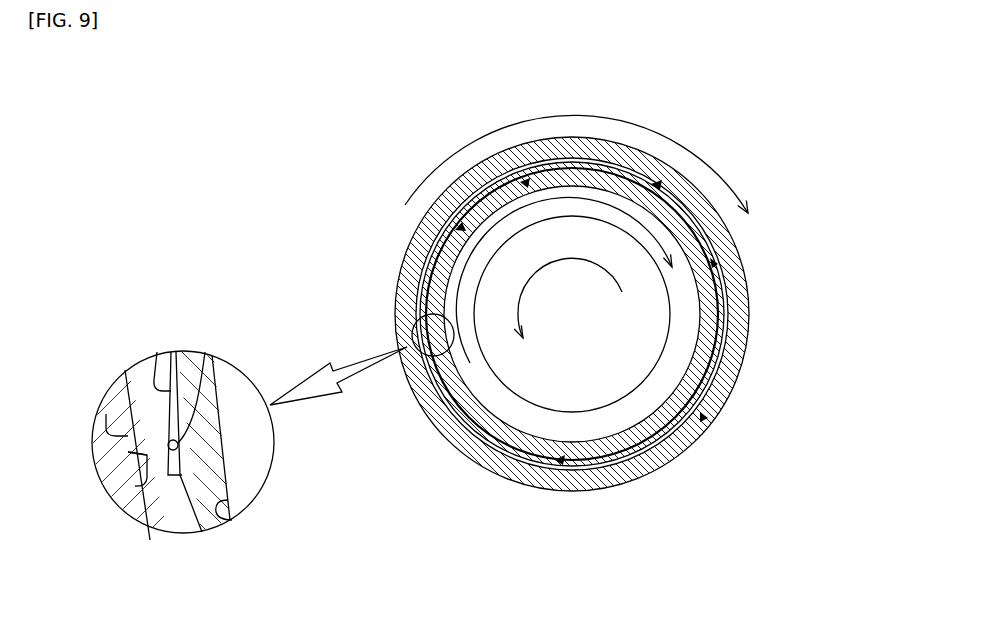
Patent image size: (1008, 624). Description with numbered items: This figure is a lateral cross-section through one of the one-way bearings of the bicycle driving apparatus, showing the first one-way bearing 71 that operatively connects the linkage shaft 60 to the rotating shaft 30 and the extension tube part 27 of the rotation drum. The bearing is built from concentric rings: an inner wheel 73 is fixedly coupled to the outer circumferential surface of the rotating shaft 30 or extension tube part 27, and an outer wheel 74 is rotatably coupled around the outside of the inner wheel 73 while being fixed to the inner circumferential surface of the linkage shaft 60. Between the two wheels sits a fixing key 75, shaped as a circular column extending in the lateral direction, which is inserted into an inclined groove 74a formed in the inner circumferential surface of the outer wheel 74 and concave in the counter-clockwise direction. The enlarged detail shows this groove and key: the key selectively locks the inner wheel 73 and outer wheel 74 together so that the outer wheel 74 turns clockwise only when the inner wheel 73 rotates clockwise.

The extension tube part 27 is at (695, 420).
The rotating shaft 30 is at (540, 408).
The linkage shaft 60 is at (680, 173).
The first one-way bearing 71 is at (724, 368).
The inner wheel 73 is at (705, 263).
The outer wheel 74 is at (732, 297).
The inclined groove 74a is at (150, 540).
The fixing key 75 is at (204, 352).